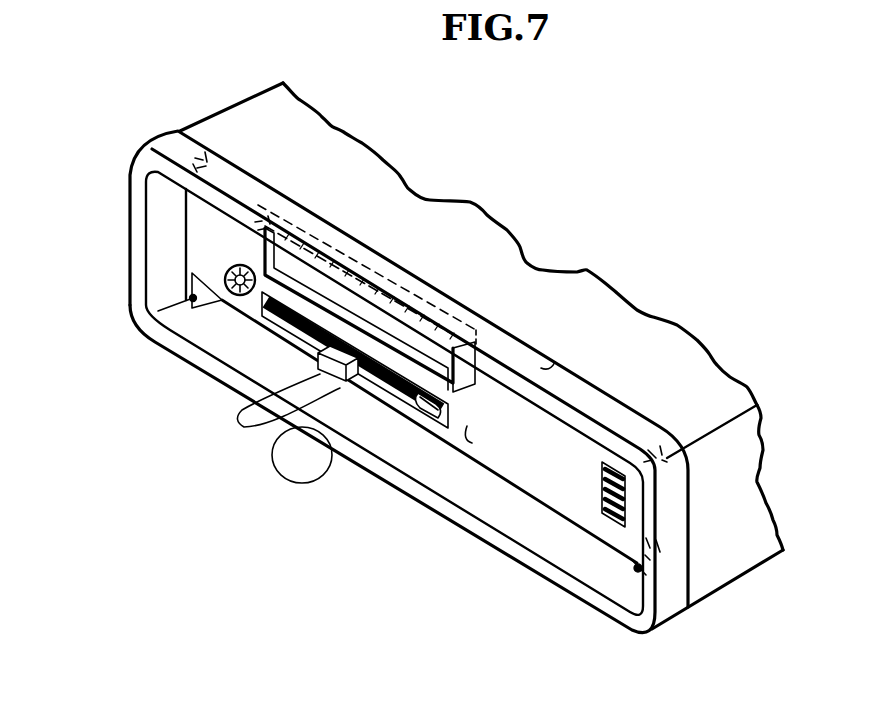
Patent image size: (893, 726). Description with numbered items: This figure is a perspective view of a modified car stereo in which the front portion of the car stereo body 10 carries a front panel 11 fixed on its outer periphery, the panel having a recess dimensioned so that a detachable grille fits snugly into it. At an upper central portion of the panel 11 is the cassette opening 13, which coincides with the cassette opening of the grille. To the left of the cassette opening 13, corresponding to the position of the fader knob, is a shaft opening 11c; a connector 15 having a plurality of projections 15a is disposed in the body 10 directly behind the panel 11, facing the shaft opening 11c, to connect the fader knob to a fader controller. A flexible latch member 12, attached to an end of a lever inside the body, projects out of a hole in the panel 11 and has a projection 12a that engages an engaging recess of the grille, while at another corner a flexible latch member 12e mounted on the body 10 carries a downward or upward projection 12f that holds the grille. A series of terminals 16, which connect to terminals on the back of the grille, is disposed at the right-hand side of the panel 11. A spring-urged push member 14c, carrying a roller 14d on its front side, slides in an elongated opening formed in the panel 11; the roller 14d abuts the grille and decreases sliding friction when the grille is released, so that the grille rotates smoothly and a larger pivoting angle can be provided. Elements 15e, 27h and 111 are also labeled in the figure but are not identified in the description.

The car stereo body 10 is at (516, 278).
The front panel 11 is at (665, 618).
The flexible latch member 12 is at (667, 428).
The projection 12a is at (633, 558).
The flexible latch member 12e is at (203, 133).
The projection 12f is at (187, 296).
The shaft opening 11c is at (230, 267).
The cassette opening 13 is at (292, 262).
The push member 14c is at (265, 428).
The roller 14d is at (317, 360).
The connector 15 is at (244, 266).
The projections 15a is at (254, 293).
The engaging hook 15e is at (446, 408).
The terminals 16 is at (602, 482).
The hole 27h is at (555, 362).
The lead wire 111 is at (472, 443).